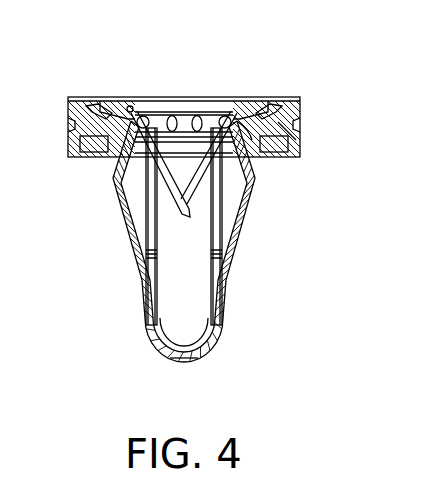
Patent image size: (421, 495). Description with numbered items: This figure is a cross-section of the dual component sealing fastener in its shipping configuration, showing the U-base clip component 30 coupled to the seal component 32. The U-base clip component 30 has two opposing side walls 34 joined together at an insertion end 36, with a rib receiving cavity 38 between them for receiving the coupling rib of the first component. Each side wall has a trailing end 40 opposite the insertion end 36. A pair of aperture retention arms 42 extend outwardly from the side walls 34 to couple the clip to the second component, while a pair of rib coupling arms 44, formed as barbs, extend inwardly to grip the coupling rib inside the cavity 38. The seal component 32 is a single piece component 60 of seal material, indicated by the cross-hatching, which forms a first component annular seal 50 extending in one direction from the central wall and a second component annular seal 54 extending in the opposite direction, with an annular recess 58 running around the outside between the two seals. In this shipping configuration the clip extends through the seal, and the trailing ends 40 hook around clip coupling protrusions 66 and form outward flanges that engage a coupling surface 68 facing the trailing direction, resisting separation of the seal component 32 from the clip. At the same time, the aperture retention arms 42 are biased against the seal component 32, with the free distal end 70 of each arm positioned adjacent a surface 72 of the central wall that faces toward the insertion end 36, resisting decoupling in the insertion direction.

The U-base clip component 30 is at (175, 272).
The seal component 32 is at (248, 96).
The opposing side walls 34 is at (150, 240).
The insertion end 36 is at (182, 360).
The rib receiving cavity 38 is at (183, 327).
The trailing end 40 is at (90, 110).
The aperture retention arms 42 is at (118, 203).
The rib coupling arms 44 is at (173, 190).
The first component annular seal 50 is at (294, 104).
The second component annular seal 54 is at (292, 141).
The annular recess 58 is at (289, 128).
The single piece component 60 is at (302, 136).
The clip coupling protrusions 66 is at (130, 106).
The coupling surface 68 is at (78, 123).
The free distal end 70 is at (248, 160).
The surface of the central wall 72 is at (220, 112).